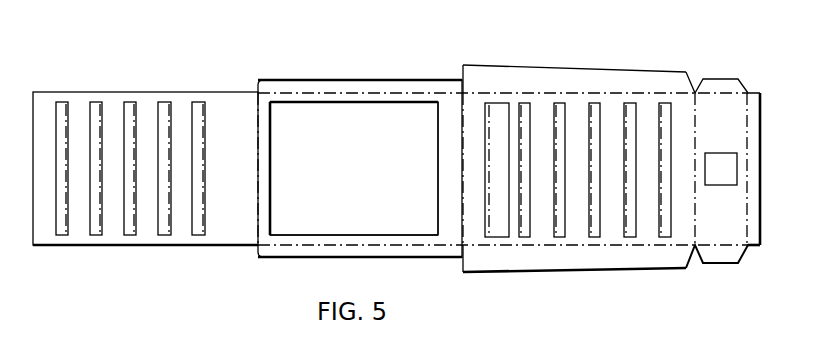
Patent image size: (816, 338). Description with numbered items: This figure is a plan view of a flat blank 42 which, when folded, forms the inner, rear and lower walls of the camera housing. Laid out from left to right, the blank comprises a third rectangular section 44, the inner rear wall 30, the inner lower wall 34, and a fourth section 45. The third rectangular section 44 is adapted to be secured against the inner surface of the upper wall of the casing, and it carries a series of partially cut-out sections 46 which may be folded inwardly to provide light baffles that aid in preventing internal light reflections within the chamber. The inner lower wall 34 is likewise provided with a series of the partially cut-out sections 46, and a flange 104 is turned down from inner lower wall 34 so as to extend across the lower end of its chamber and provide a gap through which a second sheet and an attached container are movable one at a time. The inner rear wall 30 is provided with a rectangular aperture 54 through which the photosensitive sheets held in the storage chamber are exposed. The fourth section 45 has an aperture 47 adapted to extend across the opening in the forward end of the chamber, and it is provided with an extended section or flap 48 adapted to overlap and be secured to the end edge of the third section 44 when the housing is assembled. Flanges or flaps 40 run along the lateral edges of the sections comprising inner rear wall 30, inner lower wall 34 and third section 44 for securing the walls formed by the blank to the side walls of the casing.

The blank 42 is at (300, 66).
The third rectangular section 44 is at (180, 124).
The partially cut-out sections 46 is at (62, 103).
The flanges or flaps 40 is at (373, 87).
The inner rear wall 30 is at (265, 128).
The rectangular aperture 54 is at (437, 130).
The inner lower wall 34 is at (578, 222).
The flange 104 is at (498, 108).
The fourth section 45 is at (730, 123).
The aperture 47 is at (717, 184).
The extended section or flap 48 is at (757, 266).